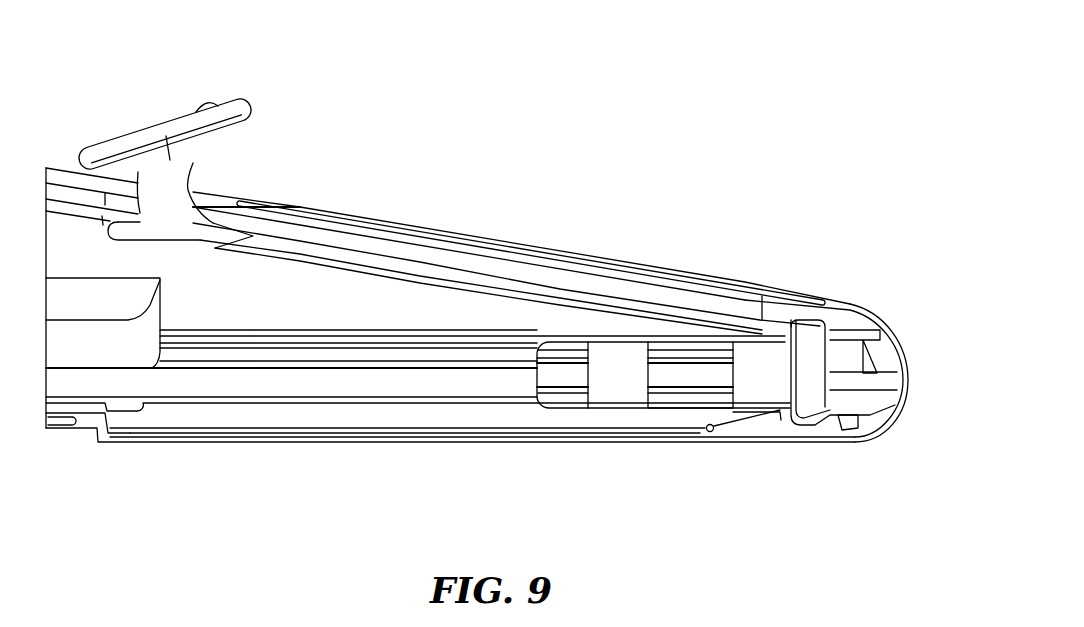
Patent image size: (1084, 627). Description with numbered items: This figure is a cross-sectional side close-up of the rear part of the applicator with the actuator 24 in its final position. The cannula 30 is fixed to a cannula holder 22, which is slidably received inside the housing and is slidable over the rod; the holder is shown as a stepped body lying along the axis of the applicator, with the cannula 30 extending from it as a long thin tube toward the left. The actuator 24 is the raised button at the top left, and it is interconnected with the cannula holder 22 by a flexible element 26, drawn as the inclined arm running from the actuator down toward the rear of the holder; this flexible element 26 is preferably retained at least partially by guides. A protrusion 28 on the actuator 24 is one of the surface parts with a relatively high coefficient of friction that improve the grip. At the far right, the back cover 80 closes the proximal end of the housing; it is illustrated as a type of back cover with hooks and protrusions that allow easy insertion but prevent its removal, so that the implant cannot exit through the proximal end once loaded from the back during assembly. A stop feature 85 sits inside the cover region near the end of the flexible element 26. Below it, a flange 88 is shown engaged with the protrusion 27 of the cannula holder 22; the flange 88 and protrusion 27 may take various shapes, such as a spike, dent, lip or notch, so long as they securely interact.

The cannula holder 22 is at (629, 368).
The actuator 24 is at (159, 148).
The flexible element 26 is at (535, 296).
The protrusion 27 is at (800, 428).
The protrusion 28 is at (213, 100).
The cannula 30 is at (243, 388).
The back cover 80 is at (897, 363).
The stop 85 is at (833, 328).
The flange 88 is at (778, 432).